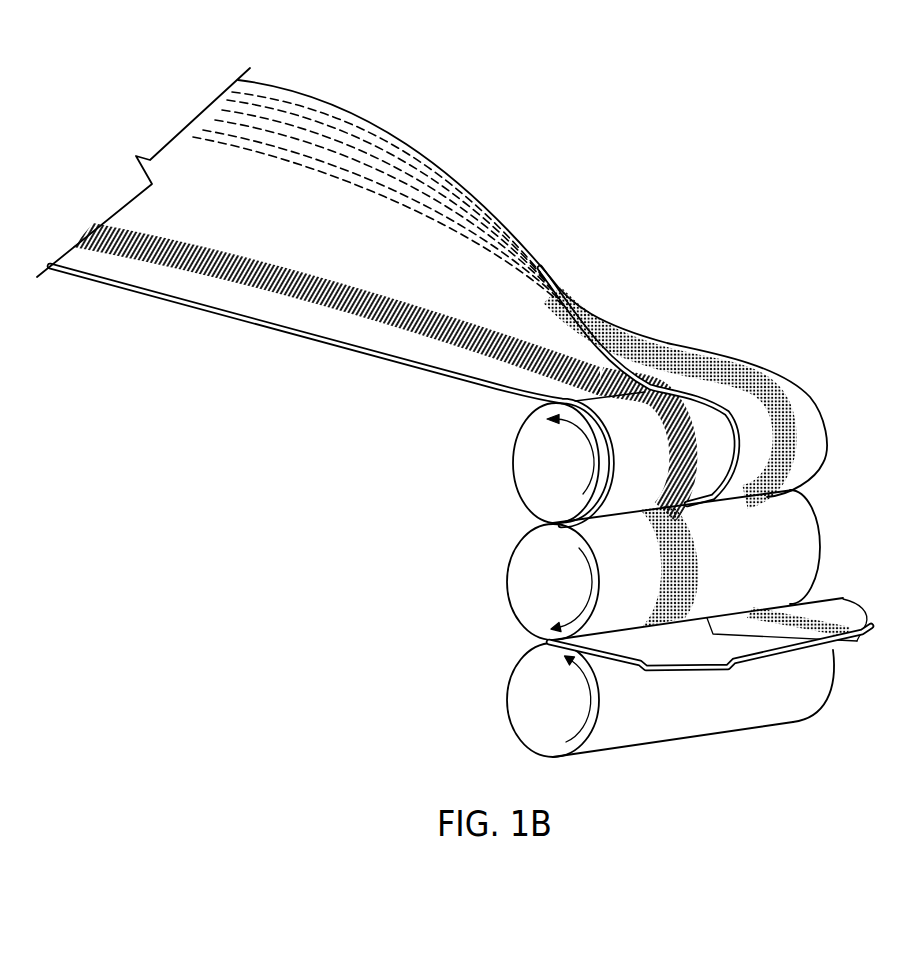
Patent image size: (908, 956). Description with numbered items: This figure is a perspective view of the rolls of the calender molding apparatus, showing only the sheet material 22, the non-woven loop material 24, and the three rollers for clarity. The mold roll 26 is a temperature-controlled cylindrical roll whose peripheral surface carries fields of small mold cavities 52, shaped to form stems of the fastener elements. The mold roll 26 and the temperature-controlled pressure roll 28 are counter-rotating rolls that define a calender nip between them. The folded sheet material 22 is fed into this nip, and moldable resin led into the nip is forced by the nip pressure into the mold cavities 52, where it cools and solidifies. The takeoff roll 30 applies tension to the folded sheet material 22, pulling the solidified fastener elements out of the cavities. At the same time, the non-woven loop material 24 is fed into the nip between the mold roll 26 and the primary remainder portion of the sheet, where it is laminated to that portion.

The sheet material 22 is at (703, 663).
The non-woven loop material 24 is at (809, 432).
The mold roll 26 is at (566, 594).
The pressure roll 28 is at (563, 716).
The takeoff roll 30 is at (572, 474).
The mold cavities 52 is at (700, 551).